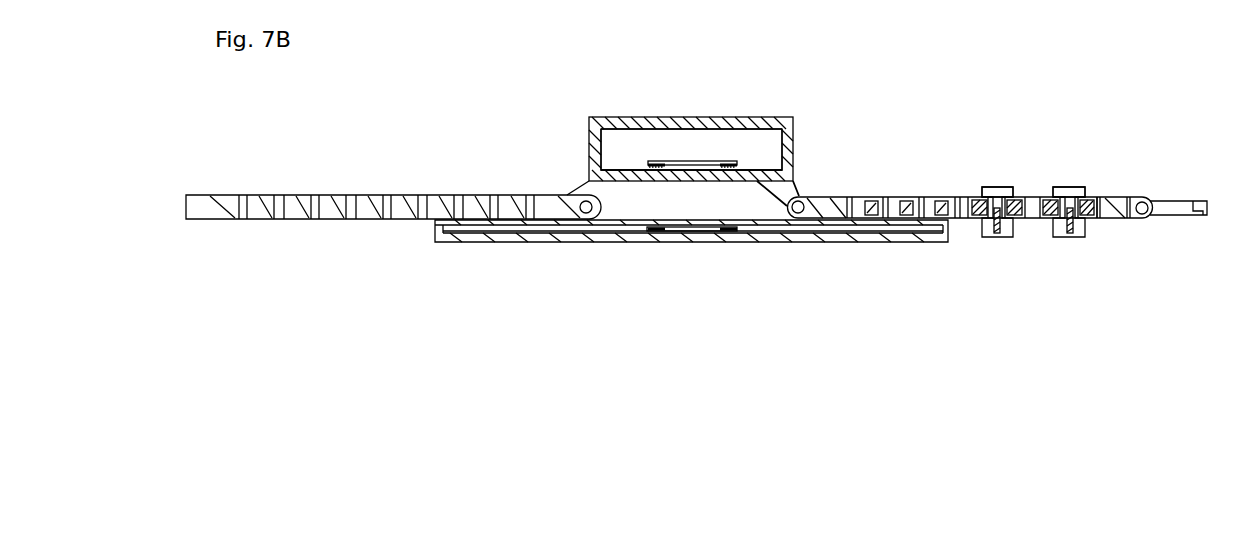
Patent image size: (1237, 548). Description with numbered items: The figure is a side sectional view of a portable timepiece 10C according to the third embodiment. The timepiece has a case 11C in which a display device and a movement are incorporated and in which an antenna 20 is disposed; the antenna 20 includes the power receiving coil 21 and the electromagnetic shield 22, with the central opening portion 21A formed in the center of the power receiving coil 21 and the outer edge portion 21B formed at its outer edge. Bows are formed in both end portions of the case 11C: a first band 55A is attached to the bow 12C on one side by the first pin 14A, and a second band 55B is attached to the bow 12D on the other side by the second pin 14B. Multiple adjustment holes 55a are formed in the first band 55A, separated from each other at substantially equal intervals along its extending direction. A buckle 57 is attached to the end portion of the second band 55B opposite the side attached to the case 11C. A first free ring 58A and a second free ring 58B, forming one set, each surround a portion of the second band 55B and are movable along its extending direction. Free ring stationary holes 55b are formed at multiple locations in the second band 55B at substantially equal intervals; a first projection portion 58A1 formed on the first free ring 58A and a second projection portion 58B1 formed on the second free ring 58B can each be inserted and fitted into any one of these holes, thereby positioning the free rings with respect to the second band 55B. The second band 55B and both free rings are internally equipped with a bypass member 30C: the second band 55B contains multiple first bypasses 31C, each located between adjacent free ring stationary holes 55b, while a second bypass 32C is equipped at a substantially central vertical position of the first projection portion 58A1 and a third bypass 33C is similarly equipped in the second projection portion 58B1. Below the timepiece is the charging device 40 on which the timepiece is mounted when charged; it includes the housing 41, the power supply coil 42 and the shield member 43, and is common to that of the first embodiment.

The portable timepiece 10C is at (812, 94).
The case 11C is at (790, 150).
The bow 12C is at (605, 185).
The bow 12D is at (790, 190).
The first pin 14A is at (585, 214).
The second pin 14B is at (798, 214).
The antenna 20 is at (680, 148).
The power receiving coil 21 is at (737, 161).
The central opening portion 21A is at (702, 138).
The outer edge portion 21B is at (648, 161).
The electromagnetic shield 22 is at (692, 161).
The bypass member 30C is at (983, 165).
The first bypass 31C is at (942, 216).
The second bypass 32C is at (998, 234).
The third bypass 33C is at (1070, 236).
The charging device 40 is at (879, 262).
The housing 41 is at (847, 242).
The power supply coil 42 is at (732, 232).
The shield member 43 is at (695, 233).
The first band 55A is at (442, 195).
The adjustment hole 55a is at (303, 195).
The second band 55B is at (1038, 197).
The free ring stationary hole 55b is at (962, 197).
The buckle 57 is at (1170, 215).
The first free ring 58A is at (988, 238).
The first projection portion 58A1 is at (1002, 187).
The second free ring 58B is at (1072, 238).
The second projection portion 58B1 is at (1065, 187).